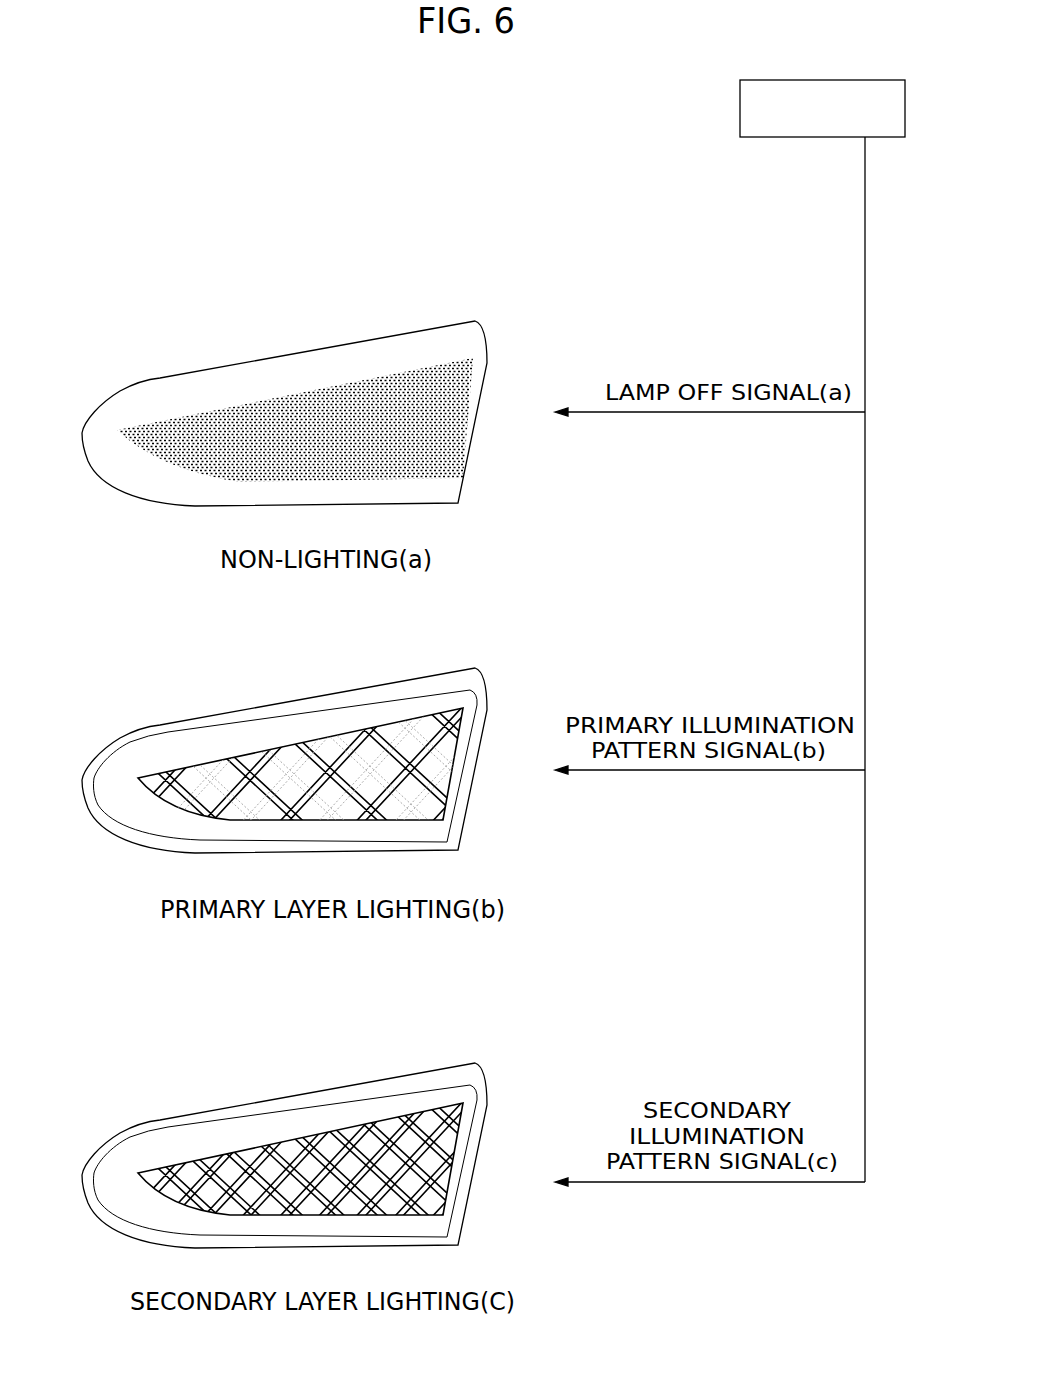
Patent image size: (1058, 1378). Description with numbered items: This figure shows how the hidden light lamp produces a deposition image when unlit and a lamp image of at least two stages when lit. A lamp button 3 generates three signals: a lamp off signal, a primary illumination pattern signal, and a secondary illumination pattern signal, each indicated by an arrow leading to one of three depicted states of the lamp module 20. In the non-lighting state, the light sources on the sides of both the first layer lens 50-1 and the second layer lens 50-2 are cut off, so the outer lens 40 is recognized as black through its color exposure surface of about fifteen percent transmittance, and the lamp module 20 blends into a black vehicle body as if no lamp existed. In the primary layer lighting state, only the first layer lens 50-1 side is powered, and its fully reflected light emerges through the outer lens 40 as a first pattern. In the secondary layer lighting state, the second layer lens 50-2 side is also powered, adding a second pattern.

The lamp button 3 is at (740, 104).
The lamp module 20 is at (279, 739).
The outer lens 40 is at (308, 417).
The first layer lens 50-1 is at (430, 441).
The second layer lens 50-2 is at (497, 1225).